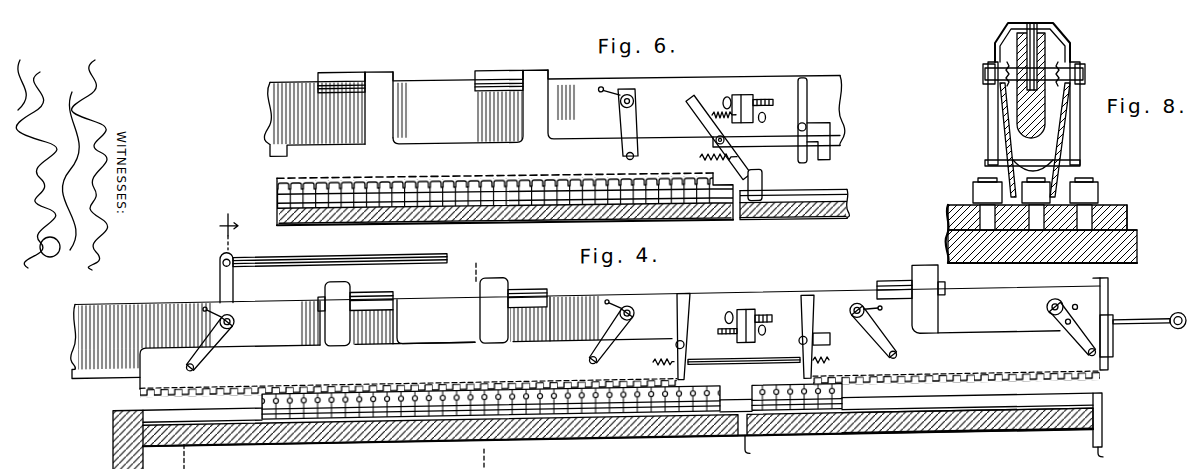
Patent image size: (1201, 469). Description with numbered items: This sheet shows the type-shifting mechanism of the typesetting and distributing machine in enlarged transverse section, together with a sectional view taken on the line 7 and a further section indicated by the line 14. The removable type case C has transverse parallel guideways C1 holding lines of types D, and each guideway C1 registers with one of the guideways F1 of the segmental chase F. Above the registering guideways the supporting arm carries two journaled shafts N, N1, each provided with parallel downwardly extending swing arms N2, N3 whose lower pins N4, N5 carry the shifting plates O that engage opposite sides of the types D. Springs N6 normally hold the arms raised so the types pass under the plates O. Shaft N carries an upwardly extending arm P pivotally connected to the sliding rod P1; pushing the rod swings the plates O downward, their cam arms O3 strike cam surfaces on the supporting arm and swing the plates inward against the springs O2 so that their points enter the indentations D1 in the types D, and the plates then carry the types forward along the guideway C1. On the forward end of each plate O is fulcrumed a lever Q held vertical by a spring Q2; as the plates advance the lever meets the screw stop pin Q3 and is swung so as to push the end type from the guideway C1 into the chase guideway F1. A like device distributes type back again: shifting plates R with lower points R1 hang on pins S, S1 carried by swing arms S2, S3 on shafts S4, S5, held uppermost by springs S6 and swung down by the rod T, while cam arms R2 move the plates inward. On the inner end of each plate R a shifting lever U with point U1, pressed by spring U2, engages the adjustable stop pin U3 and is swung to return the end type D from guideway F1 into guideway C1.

In FIG. 4, the shaft N is at (235, 315).
In FIG. 8, the shaft N is at (988, 68).
In FIG. 6, the shaft N1 is at (268, 100).
In FIG. 4, the shaft N1 is at (160, 296).
In FIG. 8, the shaft N1 is at (1016, 110).
In FIG. 4, the swing arm N2 is at (210, 345).
In FIG. 6, the swing arm N3 is at (347, 69).
In FIG. 4, the swing arm N3 is at (378, 288).
In FIG. 8, the swing arm N3 is at (1000, 46).
In FIG. 6, the pin N4 is at (758, 123).
In FIG. 4, the pin N4 is at (186, 361).
In FIG. 8, the pin N4 is at (986, 163).
In FIG. 6, the pin N5 is at (624, 156).
In FIG. 4, the pin N5 is at (589, 361).
In FIG. 4, the spring N6 is at (206, 299).
In FIG. 8, the spring N6 is at (1085, 72).
In FIG. 6, the shifting plate O is at (470, 141).
In FIG. 4, the shifting plate O is at (455, 340).
In FIG. 8, the shifting plate O is at (1006, 138).
In FIG. 8, the spring O2 is at (1038, 168).
In FIG. 6, the cam arm O3 is at (396, 104).
In FIG. 4, the cam arm O3 is at (327, 292).
In FIG. 8, the cam arm O3 is at (1075, 58).
In FIG. 4, the upwardly-extending arm P is at (234, 290).
In FIG. 8, the upwardly-extending arm P is at (1040, 28).
In FIG. 4, the rod P1 is at (345, 251).
In FIG. 6, the lever Q is at (708, 127).
In FIG. 4, the lever Q is at (688, 330).
In FIG. 6, the spring Q2 is at (699, 159).
In FIG. 4, the spring Q2 is at (656, 363).
In FIG. 6, the stop pin Q3 is at (716, 114).
In FIG. 4, the stop pin Q3 is at (718, 336).
In FIG. 6, the shifting-lever U is at (805, 81).
In FIG. 4, the shifting-lever U is at (812, 325).
In FIG. 6, the lug or point U1 is at (796, 150).
In FIG. 4, the lug or point U1 is at (785, 366).
In FIG. 6, the spring U2 is at (830, 140).
In FIG. 4, the spring U2 is at (830, 345).
In FIG. 6, the stop-pin U3 is at (748, 97).
In FIG. 4, the stop-pin U3 is at (756, 314).
In FIG. 6, the type D is at (755, 172).
In FIG. 4, the type D is at (722, 392).
In FIG. 8, the type D is at (972, 190).
In FIG. 4, the indentation D1 is at (845, 392).
In FIG. 6, the type case C is at (522, 219).
In FIG. 4, the type case C is at (368, 438).
In FIG. 8, the type case C is at (1137, 243).
In FIG. 4, the guideway C1 is at (242, 424).
In FIG. 8, the guideway C1 is at (1110, 205).
In FIG. 6, the chase F is at (820, 221).
In FIG. 4, the chase F is at (940, 438).
In FIG. 6, the guideway F1 is at (830, 193).
In FIG. 4, the guideway F1 is at (1103, 412).
In FIG. 4, the shifting plate R is at (995, 340).
In FIG. 4, the lug or point R1 is at (985, 385).
In FIG. 4, the cam-arm R2 is at (938, 325).
In FIG. 4, the pin S is at (1088, 362).
In FIG. 4, the pin S1 is at (889, 361).
In FIG. 4, the swing arm S2 is at (1068, 345).
In FIG. 4, the swing arm S3 is at (878, 333).
In FIG. 4, the shaft S4 is at (1060, 307).
In FIG. 4, the shaft S5 is at (855, 307).
In FIG. 4, the spring S6 is at (879, 310).
In FIG. 4, the rod T is at (1148, 329).
In FIG. 6, the section line 7— 7 is at (229, 219).
In FIG. 4, the section line 14— 14 is at (344, 357).